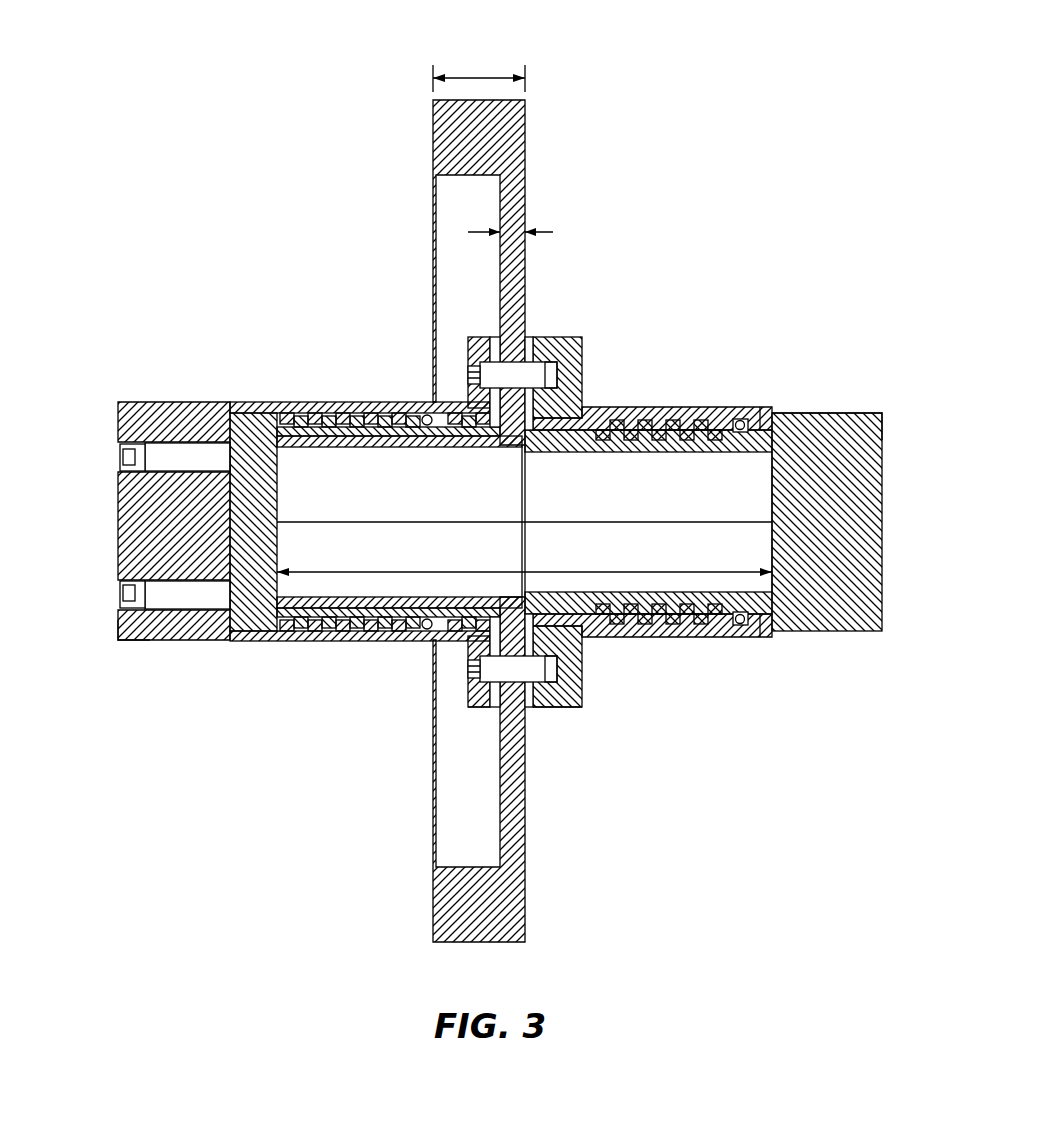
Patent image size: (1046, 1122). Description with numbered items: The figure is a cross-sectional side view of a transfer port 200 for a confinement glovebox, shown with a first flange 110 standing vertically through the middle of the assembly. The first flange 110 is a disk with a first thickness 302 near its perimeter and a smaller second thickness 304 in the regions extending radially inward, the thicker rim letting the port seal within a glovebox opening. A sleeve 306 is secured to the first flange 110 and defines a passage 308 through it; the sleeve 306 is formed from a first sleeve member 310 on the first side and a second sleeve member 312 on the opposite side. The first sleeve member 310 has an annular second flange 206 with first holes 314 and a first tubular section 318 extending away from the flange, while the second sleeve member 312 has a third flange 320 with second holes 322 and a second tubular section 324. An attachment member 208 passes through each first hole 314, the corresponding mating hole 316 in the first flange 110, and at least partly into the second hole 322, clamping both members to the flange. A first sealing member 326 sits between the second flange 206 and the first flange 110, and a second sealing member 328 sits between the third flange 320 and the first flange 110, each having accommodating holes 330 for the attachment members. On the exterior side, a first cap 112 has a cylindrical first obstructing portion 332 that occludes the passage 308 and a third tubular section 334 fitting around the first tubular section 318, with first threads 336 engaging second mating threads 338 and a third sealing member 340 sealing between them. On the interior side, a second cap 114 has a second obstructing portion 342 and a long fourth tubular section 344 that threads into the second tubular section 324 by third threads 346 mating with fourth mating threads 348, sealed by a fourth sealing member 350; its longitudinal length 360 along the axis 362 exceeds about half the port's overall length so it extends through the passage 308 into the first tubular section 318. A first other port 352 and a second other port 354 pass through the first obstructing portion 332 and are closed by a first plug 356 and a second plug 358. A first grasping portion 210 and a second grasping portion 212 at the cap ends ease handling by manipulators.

The transfer port 200 is at (726, 181).
The first flange 110 is at (456, 130).
The first cap 112 is at (208, 408).
The second cap 114 is at (771, 420).
The second flange 206 is at (472, 345).
The attachment member 208 is at (470, 367).
The first grasping portion 210 is at (140, 641).
The second grasping portion 212 is at (851, 414).
The first thickness 302 is at (482, 72).
The second thickness 304 is at (530, 232).
The sleeve 306 is at (399, 522).
The passage 308 is at (636, 474).
The first sleeve member 310 is at (452, 597).
The second sleeve member 312 is at (500, 448).
The first holes 314 is at (470, 384).
The mating holes 316 is at (527, 348).
The first tubular section 318 is at (349, 413).
The third flange 320 is at (563, 340).
The second holes 322 is at (585, 378).
The second tubular section 324 is at (742, 641).
The first sealing member 326 is at (488, 700).
The second sealing member 328 is at (545, 712).
The accommodating holes 330 is at (494, 355).
The first obstructing portion 332 is at (136, 523).
The third tubular section 334 is at (243, 641).
The first threads 336 is at (306, 412).
The second mating threads 338 is at (300, 641).
The third sealing member 340 is at (423, 640).
The second obstructing portion 342 is at (866, 484).
The fourth tubular section 344 is at (666, 455).
The third threads 346 is at (691, 640).
The fourth mating threads 348 is at (696, 412).
The fourth sealing member 350 is at (756, 633).
The first other port 352 is at (181, 440).
The second other port 354 is at (189, 640).
The first plug 356 is at (122, 458).
The second plug 358 is at (122, 598).
The longitudinal length 360 is at (700, 572).
The axis 362 is at (780, 510).